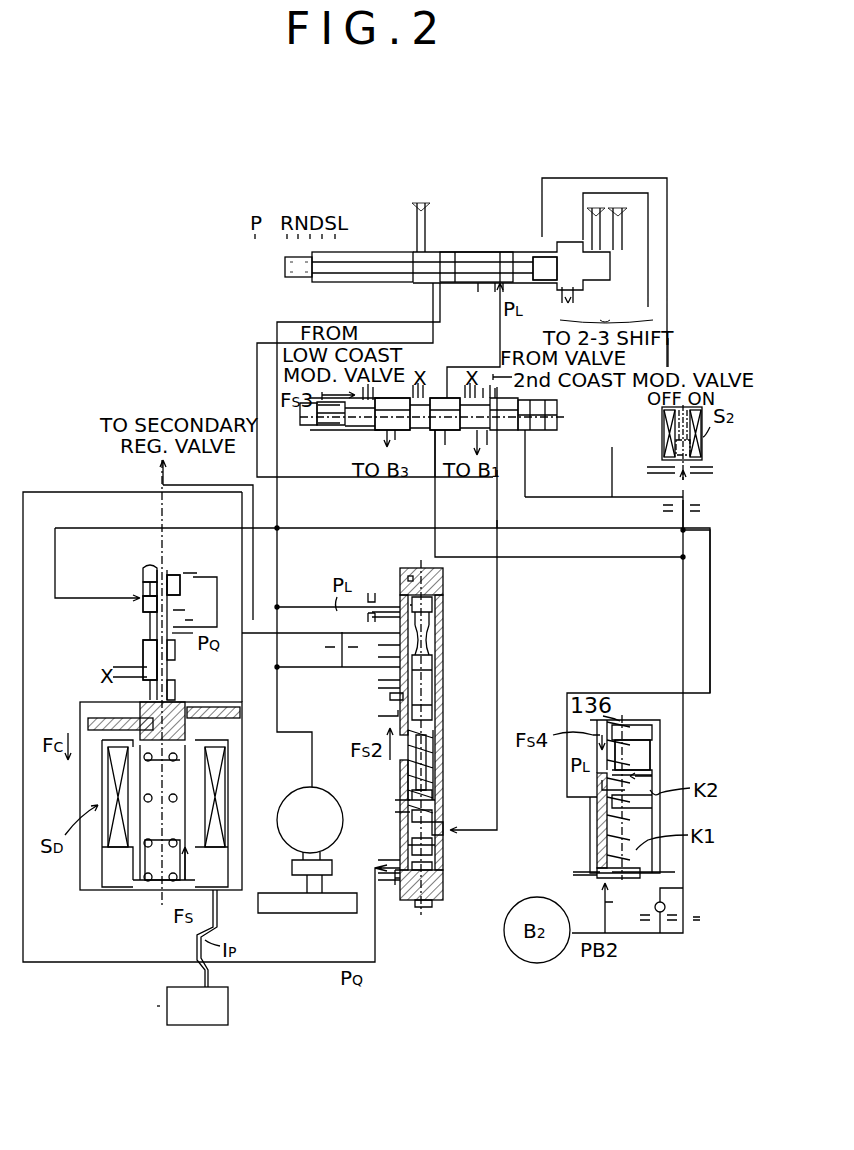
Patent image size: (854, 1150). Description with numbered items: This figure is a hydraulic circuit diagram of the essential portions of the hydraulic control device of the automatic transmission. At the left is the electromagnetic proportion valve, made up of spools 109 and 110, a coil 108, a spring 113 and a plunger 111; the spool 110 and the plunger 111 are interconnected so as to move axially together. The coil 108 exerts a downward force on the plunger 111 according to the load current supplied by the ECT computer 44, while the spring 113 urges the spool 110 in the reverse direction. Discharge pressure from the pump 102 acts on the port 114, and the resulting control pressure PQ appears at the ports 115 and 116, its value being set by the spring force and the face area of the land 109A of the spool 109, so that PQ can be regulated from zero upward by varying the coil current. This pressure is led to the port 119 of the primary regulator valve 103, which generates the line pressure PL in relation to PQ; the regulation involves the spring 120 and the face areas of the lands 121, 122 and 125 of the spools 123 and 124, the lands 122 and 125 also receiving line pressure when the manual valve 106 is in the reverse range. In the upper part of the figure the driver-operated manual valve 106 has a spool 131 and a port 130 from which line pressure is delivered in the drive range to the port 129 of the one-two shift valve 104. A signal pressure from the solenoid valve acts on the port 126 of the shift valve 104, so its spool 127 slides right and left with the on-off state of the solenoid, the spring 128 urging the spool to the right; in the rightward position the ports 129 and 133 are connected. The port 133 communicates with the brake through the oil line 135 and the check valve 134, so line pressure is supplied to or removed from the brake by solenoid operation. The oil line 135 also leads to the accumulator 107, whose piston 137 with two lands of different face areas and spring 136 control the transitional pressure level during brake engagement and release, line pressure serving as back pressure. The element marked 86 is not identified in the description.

The 2-3 shift valve line box 86 is at (563, 168).
The manual valve 106 is at (463, 265).
The port 130 is at (540, 250).
The spool 131 is at (478, 290).
The port 129 is at (443, 390).
The spring 128 is at (320, 425).
The spool 127 is at (361, 427).
The port 133 is at (440, 432).
The 1-2 shift valve 104 is at (540, 440).
The port 126 is at (496, 480).
The spring 136 is at (280, 528).
The oil line 135 is at (676, 605).
The accumulator piston 137 is at (654, 768).
The land 109A is at (150, 588).
The spool 109 is at (162, 575).
The port 116 is at (185, 575).
The port 115 is at (185, 620).
The port 114 is at (142, 600).
The spool 110 is at (172, 695).
The plunger 111 is at (238, 712).
The spring 113 is at (183, 830).
The coil 108 is at (186, 796).
The pump 102 is at (336, 810).
The land 121 is at (432, 598).
The spool 123 is at (443, 676).
The spring 120 is at (433, 750).
The land 122 is at (435, 792).
The spool 124 is at (442, 823).
The land 125 is at (440, 850).
The port 119 is at (391, 877).
The primary regulator valve 103 is at (455, 770).
The accumulator 107 is at (610, 786).
The check valve 134 is at (693, 921).
The ECT computer 44 is at (230, 1005).